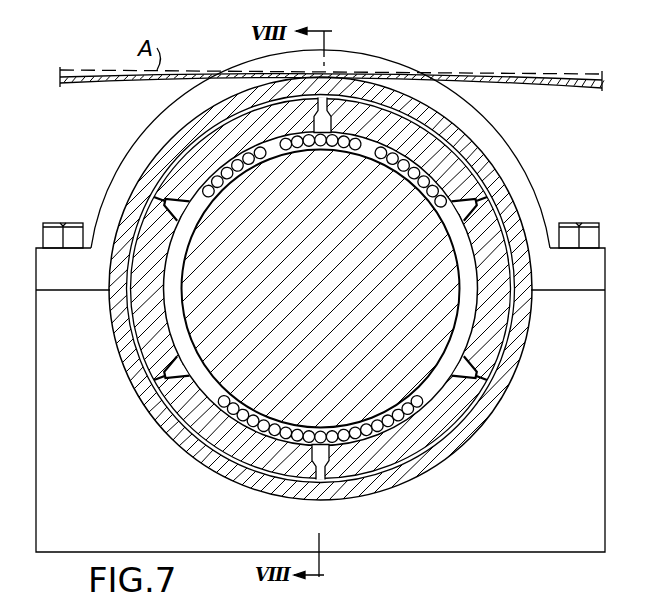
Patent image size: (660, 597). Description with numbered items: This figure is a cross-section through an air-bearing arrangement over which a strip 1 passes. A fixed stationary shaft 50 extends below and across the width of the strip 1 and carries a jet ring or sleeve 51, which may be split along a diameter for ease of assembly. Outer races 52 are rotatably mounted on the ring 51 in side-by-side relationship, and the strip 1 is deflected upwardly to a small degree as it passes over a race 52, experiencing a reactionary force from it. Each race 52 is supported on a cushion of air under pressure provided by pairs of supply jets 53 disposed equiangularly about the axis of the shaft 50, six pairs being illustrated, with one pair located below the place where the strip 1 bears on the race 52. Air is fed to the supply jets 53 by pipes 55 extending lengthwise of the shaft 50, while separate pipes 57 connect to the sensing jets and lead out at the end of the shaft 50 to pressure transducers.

The strip 1 is at (518, 79).
The fixed stationary shaft 50 is at (204, 376).
The jet ring or sleeve 51 is at (498, 336).
The outer race 52 is at (525, 318).
The supply jet 53 is at (334, 124).
The pipe 55 is at (263, 416).
The pipe 57 is at (232, 183).